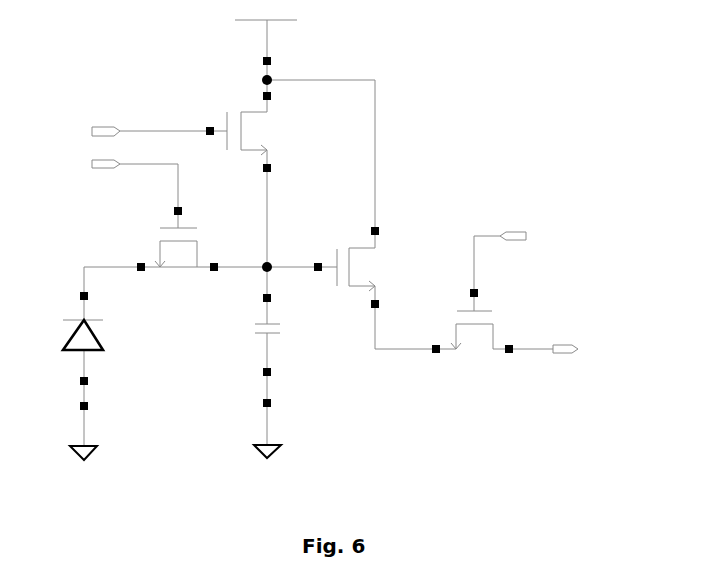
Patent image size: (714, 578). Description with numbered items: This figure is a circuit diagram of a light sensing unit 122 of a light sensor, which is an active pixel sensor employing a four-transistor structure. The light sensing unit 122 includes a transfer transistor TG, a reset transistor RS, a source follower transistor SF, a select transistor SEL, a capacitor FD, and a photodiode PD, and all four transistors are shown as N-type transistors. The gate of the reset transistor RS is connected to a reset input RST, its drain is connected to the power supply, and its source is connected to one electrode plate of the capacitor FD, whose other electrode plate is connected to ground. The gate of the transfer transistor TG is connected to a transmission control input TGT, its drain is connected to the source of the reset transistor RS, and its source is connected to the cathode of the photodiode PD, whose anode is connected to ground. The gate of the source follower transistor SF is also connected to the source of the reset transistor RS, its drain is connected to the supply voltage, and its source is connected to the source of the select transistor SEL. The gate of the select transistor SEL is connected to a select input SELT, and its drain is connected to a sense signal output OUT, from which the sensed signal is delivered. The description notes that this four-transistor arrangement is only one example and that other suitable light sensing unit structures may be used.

The light sensing unit 122 is at (325, 240).
The reset transistor RS is at (234, 118).
The reset input RST is at (81, 131).
The transmission control input TGT is at (80, 163).
The transfer transistor TG is at (158, 237).
The photodiode PD is at (63, 390).
The capacitor FD is at (248, 389).
The source follower transistor SF is at (344, 256).
The select transistor SEL is at (448, 319).
The select input SELT is at (537, 236).
The sense signal output OUT is at (590, 349).